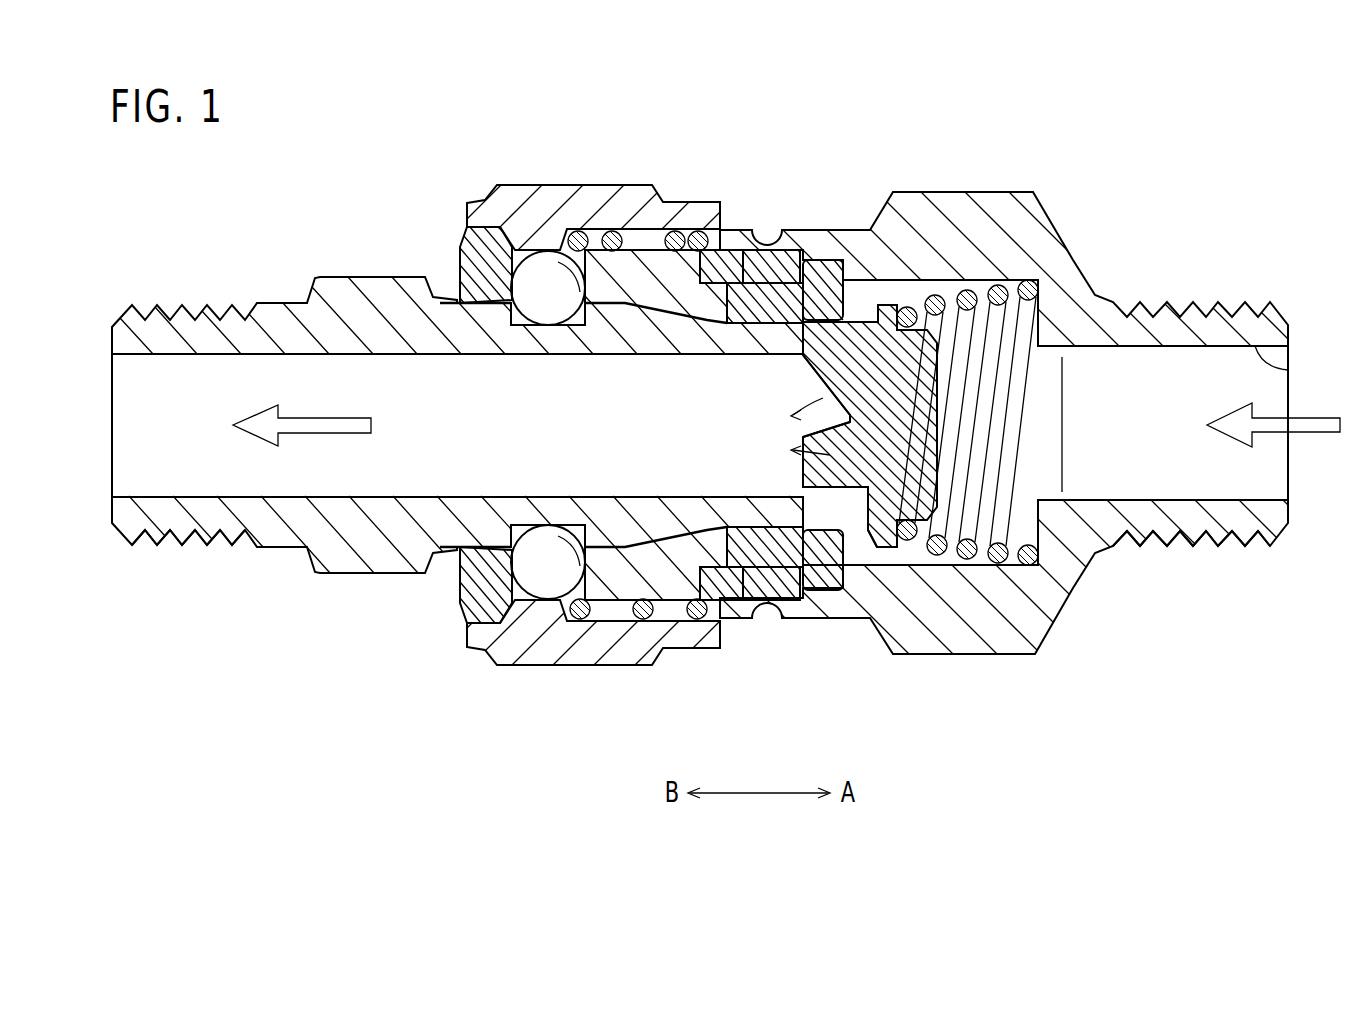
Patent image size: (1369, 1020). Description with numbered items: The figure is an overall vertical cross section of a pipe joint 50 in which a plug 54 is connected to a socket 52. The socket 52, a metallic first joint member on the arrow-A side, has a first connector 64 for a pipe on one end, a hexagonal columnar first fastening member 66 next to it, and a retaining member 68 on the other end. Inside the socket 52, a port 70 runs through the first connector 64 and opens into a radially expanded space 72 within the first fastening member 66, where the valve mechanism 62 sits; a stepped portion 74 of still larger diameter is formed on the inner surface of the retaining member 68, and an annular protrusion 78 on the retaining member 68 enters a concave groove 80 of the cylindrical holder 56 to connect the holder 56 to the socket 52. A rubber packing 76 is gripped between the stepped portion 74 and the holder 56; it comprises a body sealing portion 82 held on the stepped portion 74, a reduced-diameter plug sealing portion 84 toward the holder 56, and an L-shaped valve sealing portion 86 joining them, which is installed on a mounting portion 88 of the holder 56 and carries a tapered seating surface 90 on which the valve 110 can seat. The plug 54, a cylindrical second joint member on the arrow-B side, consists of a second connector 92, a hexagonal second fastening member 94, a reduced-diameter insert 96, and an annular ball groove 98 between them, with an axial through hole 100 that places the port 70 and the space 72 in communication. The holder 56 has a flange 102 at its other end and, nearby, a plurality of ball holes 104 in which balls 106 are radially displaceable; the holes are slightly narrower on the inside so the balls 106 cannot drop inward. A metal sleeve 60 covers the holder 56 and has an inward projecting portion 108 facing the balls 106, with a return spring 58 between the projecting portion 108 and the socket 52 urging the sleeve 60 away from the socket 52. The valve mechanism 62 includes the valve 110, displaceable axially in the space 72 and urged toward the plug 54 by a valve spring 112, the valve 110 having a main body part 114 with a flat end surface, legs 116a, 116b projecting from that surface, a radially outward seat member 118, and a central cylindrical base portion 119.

The pipe joint 50 is at (1230, 191).
The socket 52 is at (1070, 235).
The plug 54 is at (333, 272).
The holder 56 is at (720, 262).
The return spring 58 is at (698, 622).
The sleeve 60 is at (560, 675).
The valve mechanism 62 is at (882, 558).
The first connector 64 is at (1258, 542).
The first fastening member 66 is at (1015, 638).
The retaining member 68 is at (800, 237).
The port 70 is at (1290, 368).
The space 72 is at (950, 292).
The stepped portion 74 is at (824, 262).
The packing 76 is at (812, 595).
The annular protrusion 78 is at (770, 268).
The concave groove 80 is at (722, 302).
The body sealing portion 82 is at (825, 572).
The plug sealing portion 84 is at (775, 450).
The valve sealing portion 86 is at (762, 552).
The mounting portion 88 is at (800, 272).
The seating surface 90 is at (850, 300).
The second connector 92 is at (200, 550).
The second fastening member 94 is at (375, 575).
The insert 96 is at (680, 520).
The ball groove 98 is at (543, 492).
The through hole 100 is at (125, 355).
The flange 102 is at (458, 262).
The ball holes 104 is at (530, 585).
The balls 106 is at (528, 312).
The projecting portion 108 is at (545, 245).
The valve 110 is at (863, 520).
The valve spring 112 is at (1045, 552).
The main body part 114 is at (940, 545).
The leg 116a is at (808, 336).
The leg 116b is at (840, 503).
The seat member 118 is at (888, 292).
The base portion 119 is at (875, 435).